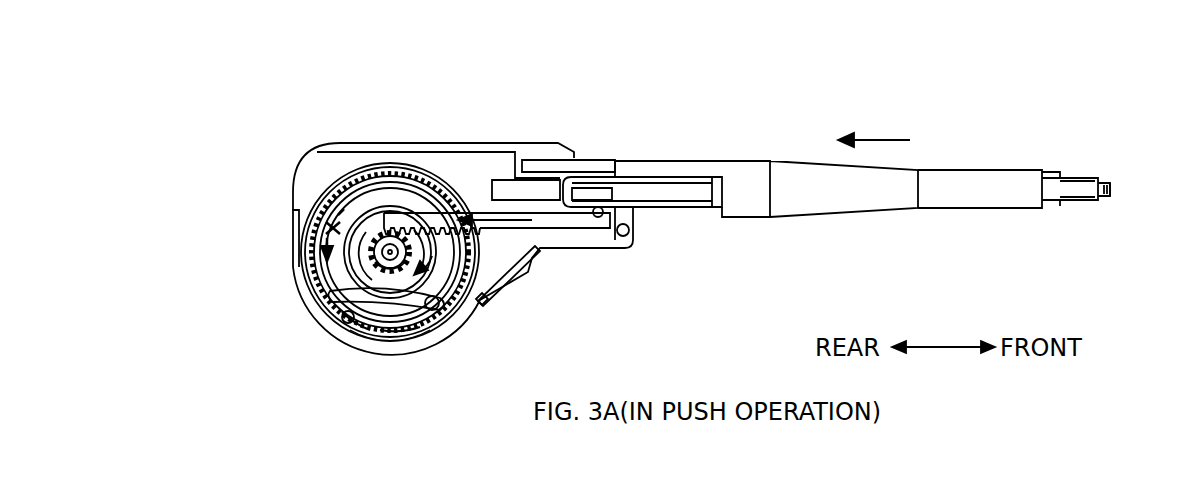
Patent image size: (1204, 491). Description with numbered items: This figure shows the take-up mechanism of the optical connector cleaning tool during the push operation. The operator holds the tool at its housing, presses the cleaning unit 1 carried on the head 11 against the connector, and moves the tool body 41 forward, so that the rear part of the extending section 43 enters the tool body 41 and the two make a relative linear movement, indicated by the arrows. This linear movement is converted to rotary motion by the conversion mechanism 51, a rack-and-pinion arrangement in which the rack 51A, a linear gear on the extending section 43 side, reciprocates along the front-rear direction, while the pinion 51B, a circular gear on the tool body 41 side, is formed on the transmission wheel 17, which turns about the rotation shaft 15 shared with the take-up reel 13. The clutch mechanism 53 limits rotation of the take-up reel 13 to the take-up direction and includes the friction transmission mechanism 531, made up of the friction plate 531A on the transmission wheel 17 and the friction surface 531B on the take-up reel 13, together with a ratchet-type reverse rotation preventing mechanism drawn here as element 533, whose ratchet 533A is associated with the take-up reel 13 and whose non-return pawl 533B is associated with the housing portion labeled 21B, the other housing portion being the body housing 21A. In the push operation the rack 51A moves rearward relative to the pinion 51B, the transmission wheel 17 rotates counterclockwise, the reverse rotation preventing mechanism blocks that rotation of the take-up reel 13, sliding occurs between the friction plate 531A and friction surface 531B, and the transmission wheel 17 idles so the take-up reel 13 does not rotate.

The cleaning unit 1 is at (1112, 190).
The head 11 is at (1110, 203).
The take-up reel 13 is at (390, 252).
The rotation shaft 15 is at (382, 235).
The transmission wheel 17 is at (390, 265).
The body housing 21A is at (938, 208).
The rear body portion 21B is at (393, 147).
The tool body 41 is at (468, 118).
The extending section 43 is at (970, 118).
The conversion mechanism 51 is at (656, 280).
The rack 51A is at (510, 226).
The pinion 51B is at (428, 262).
The clutch mechanism 53 is at (390, 252).
The friction transmission mechanism 531 is at (152, 268).
The friction plate 531A is at (350, 282).
The friction surface 531B is at (345, 263).
The ratchet 533 is at (442, 438).
The ratchet pawl 533A is at (348, 328).
The ratchet teeth 533B is at (403, 325).